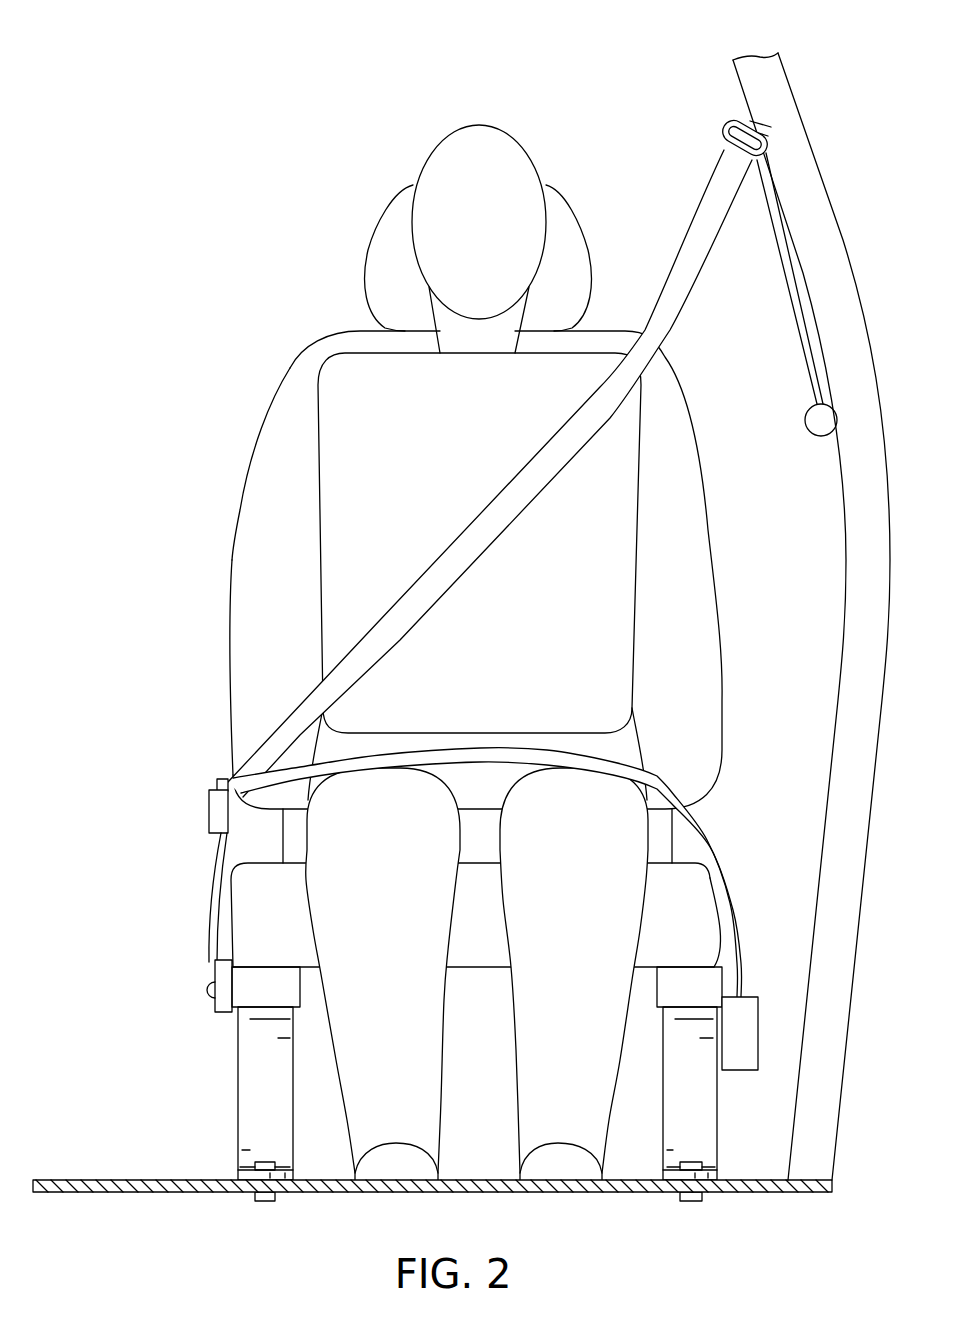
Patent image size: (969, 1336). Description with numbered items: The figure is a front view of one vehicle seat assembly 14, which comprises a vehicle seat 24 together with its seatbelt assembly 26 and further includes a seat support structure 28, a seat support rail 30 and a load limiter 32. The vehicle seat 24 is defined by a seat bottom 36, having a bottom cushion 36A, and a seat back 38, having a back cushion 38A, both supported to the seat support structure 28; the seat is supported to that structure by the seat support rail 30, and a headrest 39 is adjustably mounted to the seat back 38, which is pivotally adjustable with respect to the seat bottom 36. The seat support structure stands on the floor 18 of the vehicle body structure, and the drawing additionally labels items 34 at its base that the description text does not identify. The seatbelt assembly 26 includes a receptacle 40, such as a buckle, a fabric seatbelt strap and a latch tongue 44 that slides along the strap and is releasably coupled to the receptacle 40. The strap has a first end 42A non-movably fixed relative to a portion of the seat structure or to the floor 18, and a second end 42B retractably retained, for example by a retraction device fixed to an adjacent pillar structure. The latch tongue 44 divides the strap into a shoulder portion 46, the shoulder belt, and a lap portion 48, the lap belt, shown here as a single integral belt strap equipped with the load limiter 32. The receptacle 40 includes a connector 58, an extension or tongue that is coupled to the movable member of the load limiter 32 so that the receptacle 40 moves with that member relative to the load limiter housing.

The vehicle seat assembly 14 is at (538, 70).
The floor 18 is at (98, 1192).
The vehicle seat 24 is at (288, 350).
The seatbelt assembly 26 is at (418, 490).
The seat support structure 28 is at (238, 1080).
The seat support rail 30 is at (268, 992).
The load limiter 32 is at (224, 1003).
The fastener bolt 34 is at (265, 1160).
The seat bottom 36 is at (479, 972).
The bottom cushion 36A is at (688, 900).
The seat back 38 is at (243, 482).
The back cushion 38A is at (230, 596).
The headrest 39 is at (570, 200).
The receptacle 40 is at (205, 810).
The first end 42A is at (742, 987).
The second end 42B is at (787, 303).
The latch tongue 44 is at (220, 782).
The shoulder portion 46 is at (492, 550).
The lap portion 48 is at (483, 755).
The connector 58 is at (210, 892).